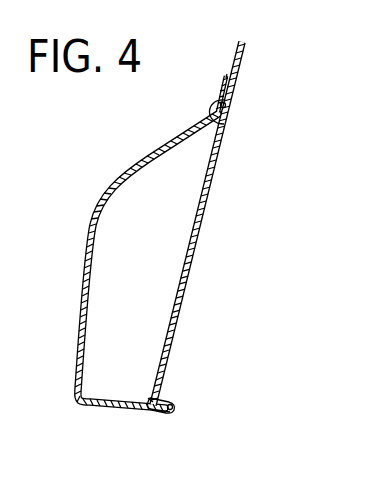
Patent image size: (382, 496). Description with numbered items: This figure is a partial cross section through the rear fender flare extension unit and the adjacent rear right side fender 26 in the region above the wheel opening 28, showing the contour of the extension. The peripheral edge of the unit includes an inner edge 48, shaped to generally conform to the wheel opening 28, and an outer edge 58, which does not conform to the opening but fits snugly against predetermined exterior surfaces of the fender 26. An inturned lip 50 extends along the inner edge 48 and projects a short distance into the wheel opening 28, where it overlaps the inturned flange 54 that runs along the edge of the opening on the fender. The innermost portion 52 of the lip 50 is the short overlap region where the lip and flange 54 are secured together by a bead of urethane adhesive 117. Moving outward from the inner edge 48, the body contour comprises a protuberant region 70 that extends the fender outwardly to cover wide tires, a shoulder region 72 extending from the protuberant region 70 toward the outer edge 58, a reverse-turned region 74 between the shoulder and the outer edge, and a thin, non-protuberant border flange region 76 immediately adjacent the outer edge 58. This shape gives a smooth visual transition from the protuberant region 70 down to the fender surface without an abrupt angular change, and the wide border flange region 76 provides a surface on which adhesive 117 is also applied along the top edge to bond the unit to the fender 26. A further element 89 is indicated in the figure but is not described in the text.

The rear right side fender 26 is at (229, 50).
The wheel opening 28 is at (150, 398).
The inner edge 48 is at (75, 398).
The inturned lip 50 is at (103, 404).
The innermost portion of lip 52 is at (170, 417).
The inturned flange 54 is at (168, 398).
The outer edge 58 is at (229, 77).
The protuberant region 70 is at (85, 222).
The shoulder region 72 is at (170, 125).
The reverse-turned region 74 is at (207, 92).
The non-protuberant border flange region 76 is at (217, 70).
The bead 89 is at (218, 120).
The bead of adhesive 117 is at (174, 408).